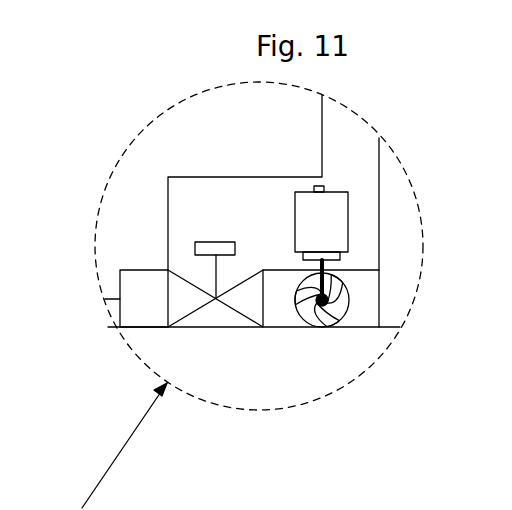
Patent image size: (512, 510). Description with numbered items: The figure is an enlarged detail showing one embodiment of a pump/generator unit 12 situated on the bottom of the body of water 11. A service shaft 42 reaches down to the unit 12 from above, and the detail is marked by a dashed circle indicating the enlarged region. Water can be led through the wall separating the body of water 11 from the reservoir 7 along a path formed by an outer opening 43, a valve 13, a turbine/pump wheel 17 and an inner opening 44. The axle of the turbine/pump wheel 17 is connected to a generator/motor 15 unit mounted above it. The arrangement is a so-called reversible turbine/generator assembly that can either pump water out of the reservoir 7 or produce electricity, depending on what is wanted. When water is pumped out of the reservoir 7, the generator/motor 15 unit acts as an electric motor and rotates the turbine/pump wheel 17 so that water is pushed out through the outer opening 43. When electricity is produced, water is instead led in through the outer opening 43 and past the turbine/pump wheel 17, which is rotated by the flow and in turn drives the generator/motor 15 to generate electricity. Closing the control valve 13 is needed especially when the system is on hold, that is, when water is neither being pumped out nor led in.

The body of water 11 is at (236, 143).
The pump/generator unit 12 is at (253, 220).
The valve 13 is at (216, 298).
The generator/motor unit 15 is at (337, 202).
The turbine/pump wheel 17 is at (340, 295).
The reservoir 7 is at (407, 263).
The service shaft 42 is at (350, 130).
The outer opening 43 is at (105, 299).
The inner opening 44 is at (377, 302).